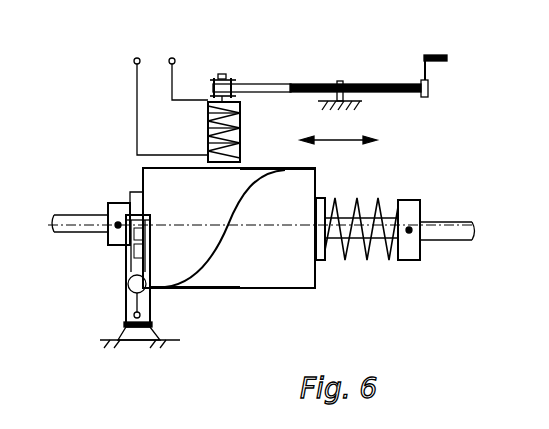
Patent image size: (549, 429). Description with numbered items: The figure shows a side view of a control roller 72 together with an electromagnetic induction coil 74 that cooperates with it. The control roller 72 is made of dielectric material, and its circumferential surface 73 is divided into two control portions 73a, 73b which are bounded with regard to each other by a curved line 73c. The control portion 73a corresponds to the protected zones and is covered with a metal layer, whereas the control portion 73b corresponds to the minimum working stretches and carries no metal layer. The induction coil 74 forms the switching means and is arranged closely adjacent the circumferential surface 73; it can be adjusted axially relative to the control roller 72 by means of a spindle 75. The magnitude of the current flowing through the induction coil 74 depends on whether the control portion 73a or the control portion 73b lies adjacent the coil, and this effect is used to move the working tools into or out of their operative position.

The control roller 72 is at (138, 167).
The circumferential surface 73 is at (302, 294).
The control portion 73a is at (260, 168).
The control portion 73b is at (233, 289).
The curved line 73c is at (232, 218).
The electromagnetic induction coil 74 is at (241, 126).
The spindle 75 is at (286, 84).